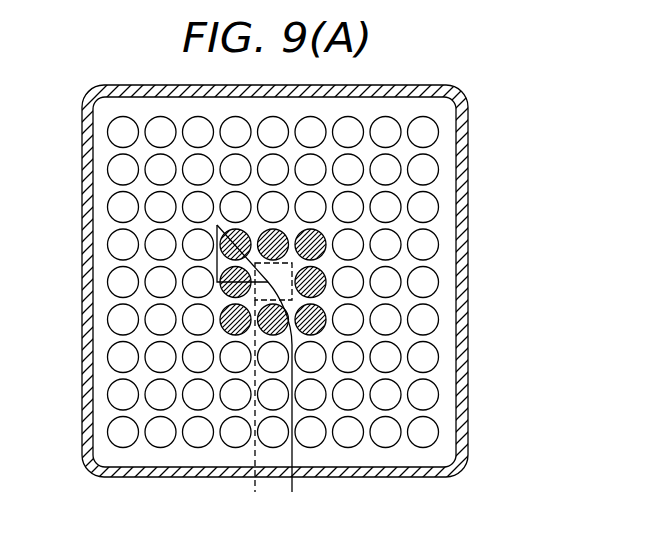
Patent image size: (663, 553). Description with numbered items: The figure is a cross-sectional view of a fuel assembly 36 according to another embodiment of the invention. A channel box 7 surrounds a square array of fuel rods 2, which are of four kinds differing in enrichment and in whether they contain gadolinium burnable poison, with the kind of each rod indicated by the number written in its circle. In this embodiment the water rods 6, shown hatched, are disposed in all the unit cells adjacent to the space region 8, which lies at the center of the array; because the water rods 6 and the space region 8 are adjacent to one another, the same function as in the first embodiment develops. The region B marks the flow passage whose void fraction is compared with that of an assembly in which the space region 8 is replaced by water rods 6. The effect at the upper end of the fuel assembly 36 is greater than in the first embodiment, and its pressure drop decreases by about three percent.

The fuel assembly 36 is at (292, 301).
The channel box 7 is at (468, 222).
The fuel rods 2 is at (437, 314).
The water rods 6 is at (232, 331).
The space region 8 is at (270, 390).
The region B is at (258, 371).